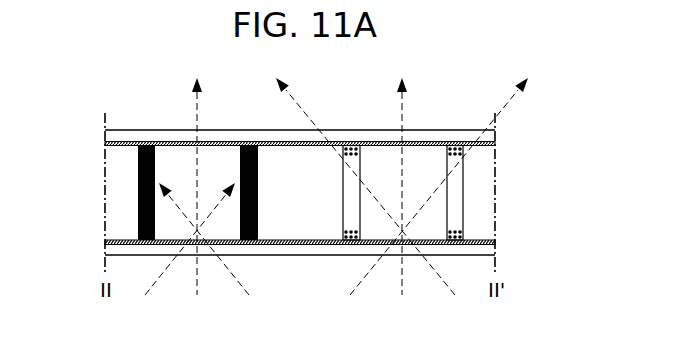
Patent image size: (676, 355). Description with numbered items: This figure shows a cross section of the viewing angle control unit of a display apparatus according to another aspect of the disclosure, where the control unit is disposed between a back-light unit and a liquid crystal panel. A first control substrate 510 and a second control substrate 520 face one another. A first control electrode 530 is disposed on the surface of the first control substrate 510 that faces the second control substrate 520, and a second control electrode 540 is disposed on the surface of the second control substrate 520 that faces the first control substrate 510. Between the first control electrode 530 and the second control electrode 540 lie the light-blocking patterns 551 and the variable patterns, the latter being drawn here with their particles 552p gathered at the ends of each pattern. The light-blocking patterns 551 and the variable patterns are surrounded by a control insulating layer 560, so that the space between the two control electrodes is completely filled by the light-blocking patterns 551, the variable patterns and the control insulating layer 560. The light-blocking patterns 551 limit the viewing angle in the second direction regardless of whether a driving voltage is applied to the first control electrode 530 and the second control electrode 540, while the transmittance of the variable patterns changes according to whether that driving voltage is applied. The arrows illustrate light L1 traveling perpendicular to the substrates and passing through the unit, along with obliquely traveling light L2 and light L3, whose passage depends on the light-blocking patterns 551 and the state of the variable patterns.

The first control substrate 510 is at (485, 249).
The second control substrate 520 is at (490, 133).
The first control electrode 530 is at (105, 243).
The second control electrode 540 is at (105, 142).
The light-blocking pattern 551 is at (137, 208).
The transparent partition wall with light blocking patterns 552p is at (468, 231).
The control insulating layer 560 is at (113, 177).
The light L1 is at (197, 109).
The second light L2 is at (362, 280).
The third light L3 is at (169, 267).